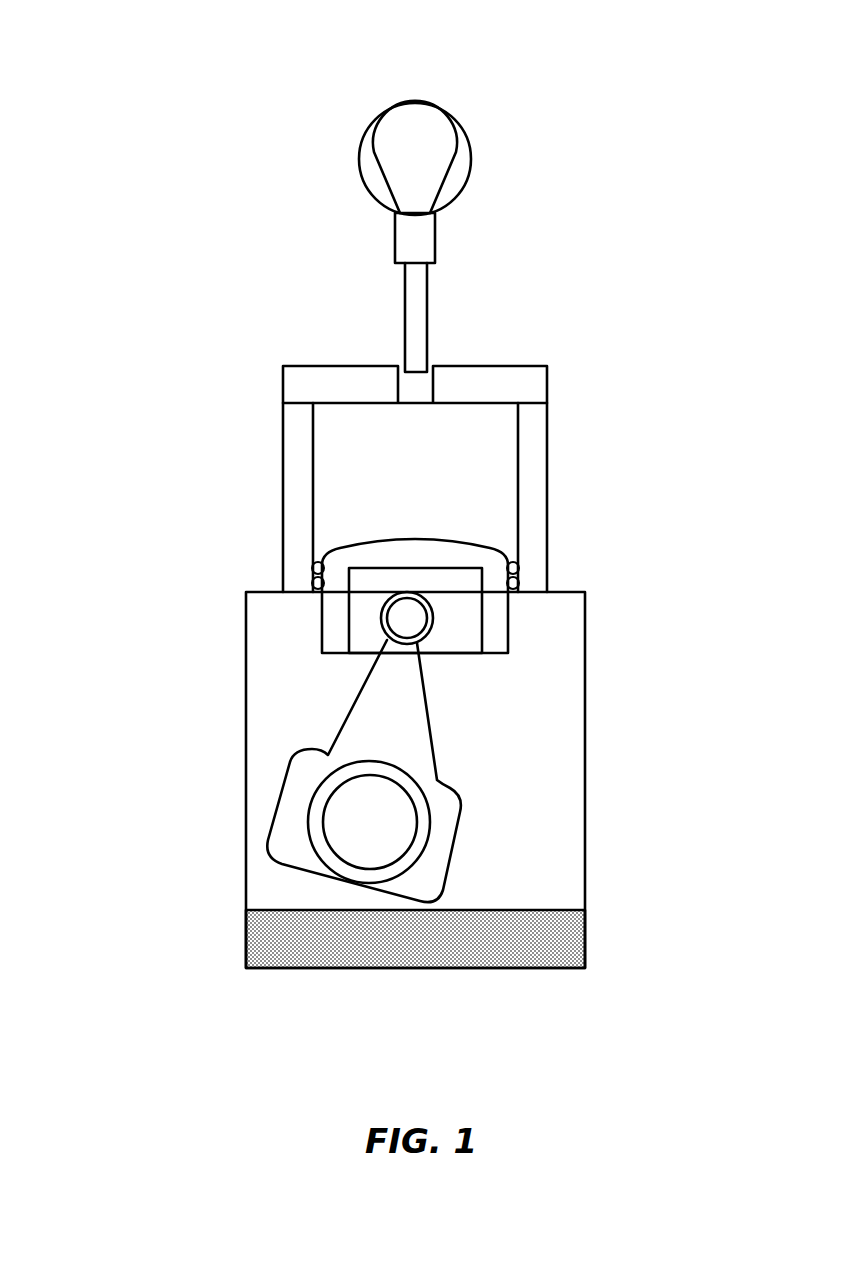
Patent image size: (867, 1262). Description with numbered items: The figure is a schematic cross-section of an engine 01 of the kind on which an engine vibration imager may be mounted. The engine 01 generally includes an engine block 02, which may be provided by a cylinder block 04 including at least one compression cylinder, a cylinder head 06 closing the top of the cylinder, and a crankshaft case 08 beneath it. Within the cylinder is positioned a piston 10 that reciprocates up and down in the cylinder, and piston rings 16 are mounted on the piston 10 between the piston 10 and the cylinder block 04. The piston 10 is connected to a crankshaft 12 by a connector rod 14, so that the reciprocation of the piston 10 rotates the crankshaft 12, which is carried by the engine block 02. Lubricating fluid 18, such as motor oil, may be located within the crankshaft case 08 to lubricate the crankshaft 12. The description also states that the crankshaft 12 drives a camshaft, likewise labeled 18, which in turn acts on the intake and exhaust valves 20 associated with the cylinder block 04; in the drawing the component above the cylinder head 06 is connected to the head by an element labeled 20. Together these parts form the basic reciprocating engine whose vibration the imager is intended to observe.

The engine 01 is at (124, 80).
The engine block 02 is at (547, 472).
The cylinder block 04 is at (295, 502).
The cylinder head 06 is at (517, 367).
The crankshaft case 08 is at (575, 835).
The piston 10 is at (332, 630).
The crankshaft 12 is at (358, 818).
The connector rod 14 is at (400, 738).
The piston rings 16 is at (516, 572).
The lubricating fluid 18 is at (467, 157).
The intake and exhaust valves 20 is at (415, 325).